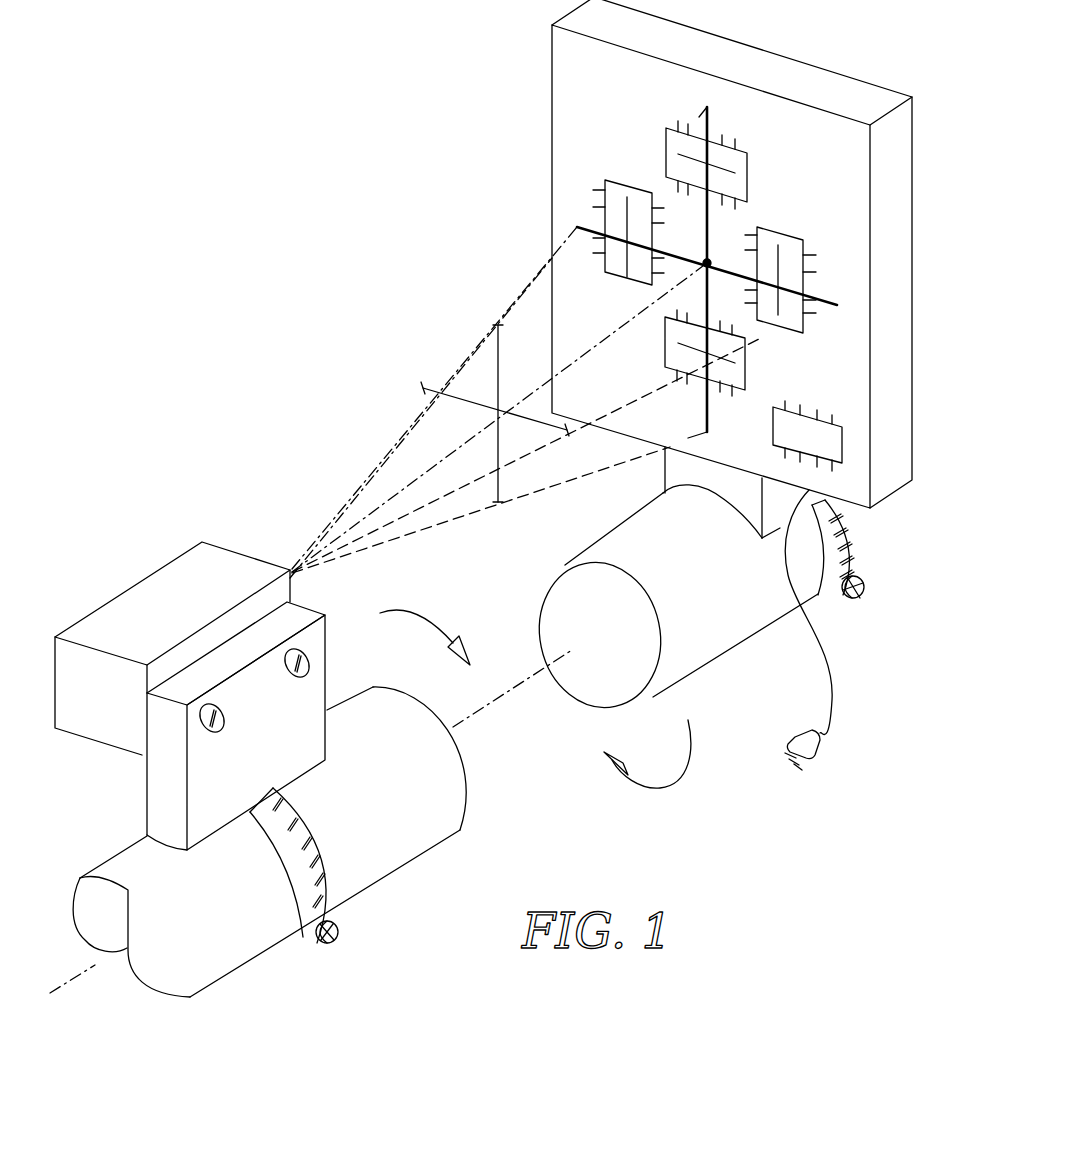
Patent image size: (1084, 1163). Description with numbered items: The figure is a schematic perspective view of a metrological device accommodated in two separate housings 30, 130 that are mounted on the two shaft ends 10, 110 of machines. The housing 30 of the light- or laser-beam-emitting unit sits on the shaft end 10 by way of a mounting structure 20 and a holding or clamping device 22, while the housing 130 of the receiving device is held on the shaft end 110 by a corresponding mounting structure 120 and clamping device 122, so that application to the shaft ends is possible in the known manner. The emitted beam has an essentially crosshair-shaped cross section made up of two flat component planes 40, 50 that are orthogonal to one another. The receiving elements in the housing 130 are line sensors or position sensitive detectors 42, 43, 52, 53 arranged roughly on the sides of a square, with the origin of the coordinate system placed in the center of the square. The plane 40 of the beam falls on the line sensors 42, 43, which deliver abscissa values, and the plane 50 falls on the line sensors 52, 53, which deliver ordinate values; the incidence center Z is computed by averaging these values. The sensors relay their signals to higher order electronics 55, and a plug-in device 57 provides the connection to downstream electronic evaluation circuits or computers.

The shaft end 10 is at (398, 748).
The mounting structure 20 is at (282, 748).
The holding or clamping device 22 is at (320, 832).
The housing 30 is at (187, 613).
The proportional plane of the light beam 40 is at (708, 156).
The line sensor 42 is at (747, 183).
The line sensor 43 is at (665, 345).
The proportional plane of the light beam 50 is at (763, 338).
The line sensor 52 is at (612, 177).
The line sensor 53 is at (788, 233).
The higher order electronics 55 is at (822, 410).
The plug-in device 57 is at (813, 742).
The shaft end 110 is at (692, 571).
The mounting structure 120 is at (698, 470).
The holding or clamping device 122 is at (863, 545).
The housing 130 is at (610, 82).